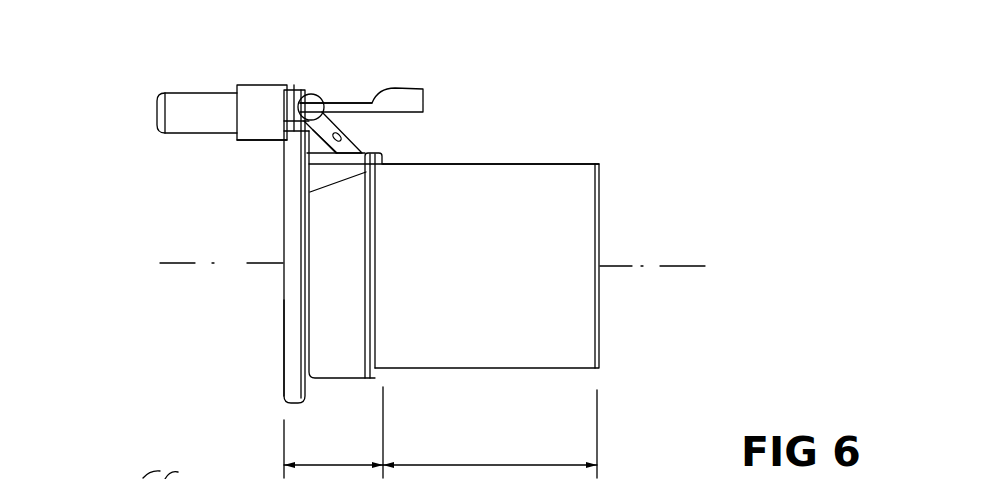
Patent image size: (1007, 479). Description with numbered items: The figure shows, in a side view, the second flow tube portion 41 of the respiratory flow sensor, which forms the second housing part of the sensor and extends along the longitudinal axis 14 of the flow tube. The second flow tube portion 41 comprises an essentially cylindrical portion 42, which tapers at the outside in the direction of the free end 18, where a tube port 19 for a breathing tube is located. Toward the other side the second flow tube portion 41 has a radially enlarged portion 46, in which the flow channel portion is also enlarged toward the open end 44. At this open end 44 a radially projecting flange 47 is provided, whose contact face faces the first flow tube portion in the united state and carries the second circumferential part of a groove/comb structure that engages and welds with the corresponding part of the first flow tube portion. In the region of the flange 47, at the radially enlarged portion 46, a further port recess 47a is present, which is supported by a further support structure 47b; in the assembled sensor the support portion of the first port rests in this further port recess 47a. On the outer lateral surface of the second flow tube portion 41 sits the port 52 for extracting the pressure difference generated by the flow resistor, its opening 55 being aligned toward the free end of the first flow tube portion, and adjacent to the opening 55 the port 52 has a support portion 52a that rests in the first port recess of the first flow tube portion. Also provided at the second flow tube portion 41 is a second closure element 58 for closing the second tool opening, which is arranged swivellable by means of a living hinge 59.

The longitudinal axis 14 is at (172, 266).
The free end 18 is at (604, 214).
The tube port 19 is at (572, 200).
The second flow tube portion 41 is at (569, 96).
The essentially cylindrical portion 42 is at (490, 434).
The open end 44 is at (280, 218).
The radially enlarged portion 46 is at (333, 304).
The radially projecting flange 47 is at (290, 347).
The further port recess 47a is at (300, 90).
The further support structure 47b is at (345, 132).
The port 52 is at (206, 77).
The support portion 52a is at (251, 144).
The opening 55 is at (157, 119).
The second closure element 58 is at (408, 106).
The living hinge 59 is at (347, 103).